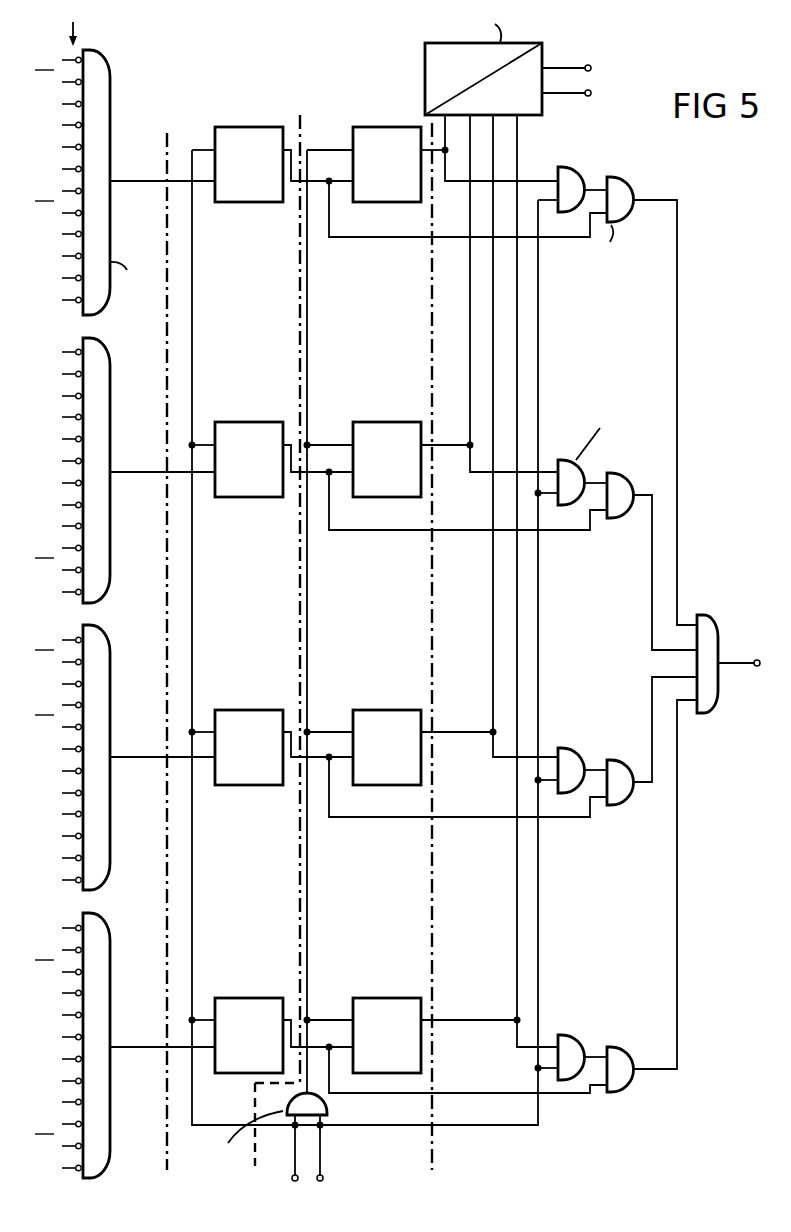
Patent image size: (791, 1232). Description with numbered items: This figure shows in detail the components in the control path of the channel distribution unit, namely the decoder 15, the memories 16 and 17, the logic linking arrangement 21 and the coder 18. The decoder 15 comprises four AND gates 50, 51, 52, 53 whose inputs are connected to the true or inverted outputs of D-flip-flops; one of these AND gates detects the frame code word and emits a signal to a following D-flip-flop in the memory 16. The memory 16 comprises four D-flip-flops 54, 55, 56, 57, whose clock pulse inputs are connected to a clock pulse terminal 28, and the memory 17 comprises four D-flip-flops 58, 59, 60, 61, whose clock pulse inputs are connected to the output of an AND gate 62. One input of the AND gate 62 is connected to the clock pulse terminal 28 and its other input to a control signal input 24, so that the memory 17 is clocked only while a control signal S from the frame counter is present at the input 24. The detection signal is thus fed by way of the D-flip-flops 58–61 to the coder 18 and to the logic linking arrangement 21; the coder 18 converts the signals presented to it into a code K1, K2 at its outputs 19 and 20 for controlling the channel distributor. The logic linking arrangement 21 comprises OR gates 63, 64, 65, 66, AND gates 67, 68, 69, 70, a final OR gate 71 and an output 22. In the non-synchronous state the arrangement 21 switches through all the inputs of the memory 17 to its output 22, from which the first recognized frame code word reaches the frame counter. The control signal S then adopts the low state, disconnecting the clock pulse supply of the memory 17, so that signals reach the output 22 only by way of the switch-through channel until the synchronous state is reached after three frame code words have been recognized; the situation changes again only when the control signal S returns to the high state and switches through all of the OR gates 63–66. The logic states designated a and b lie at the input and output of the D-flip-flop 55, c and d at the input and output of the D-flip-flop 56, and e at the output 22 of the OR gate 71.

The decoder 15 is at (145, 614).
The memory 16 is at (257, 614).
The memory 17 is at (382, 614).
The coder 18 is at (483, 63).
The output 19 is at (583, 64).
The output 20 is at (583, 103).
The logic linking arrangement 21 is at (608, 619).
The output 22 is at (741, 671).
The control signal input 24 is at (334, 1153).
The clock pulse terminal 28 is at (281, 1153).
The AND gate 50 is at (125, 187).
The AND gate 51 is at (125, 470).
The AND gate 52 is at (125, 758).
The AND gate 53 is at (125, 1046).
The D-flip-flop 54 is at (272, 151).
The D-flip-flop 55 is at (271, 446).
The D-flip-flop 56 is at (271, 734).
The D-flip-flop 57 is at (271, 1022).
The D-flip-flop 58 is at (378, 151).
The D-flip-flop 59 is at (389, 446).
The D-flip-flop 60 is at (400, 734).
The D-flip-flop 61 is at (412, 1022).
The AND gate 62 is at (353, 672).
The OR gate 63 is at (526, 163).
The OR gate 64 is at (549, 310).
The OR gate 65 is at (550, 454).
The OR gate 66 is at (562, 597).
The AND gate 67 is at (512, 391).
The AND gate 68 is at (512, 551).
The AND gate 69 is at (512, 747).
The AND gate 70 is at (512, 896).
The OR gate 71 is at (710, 651).